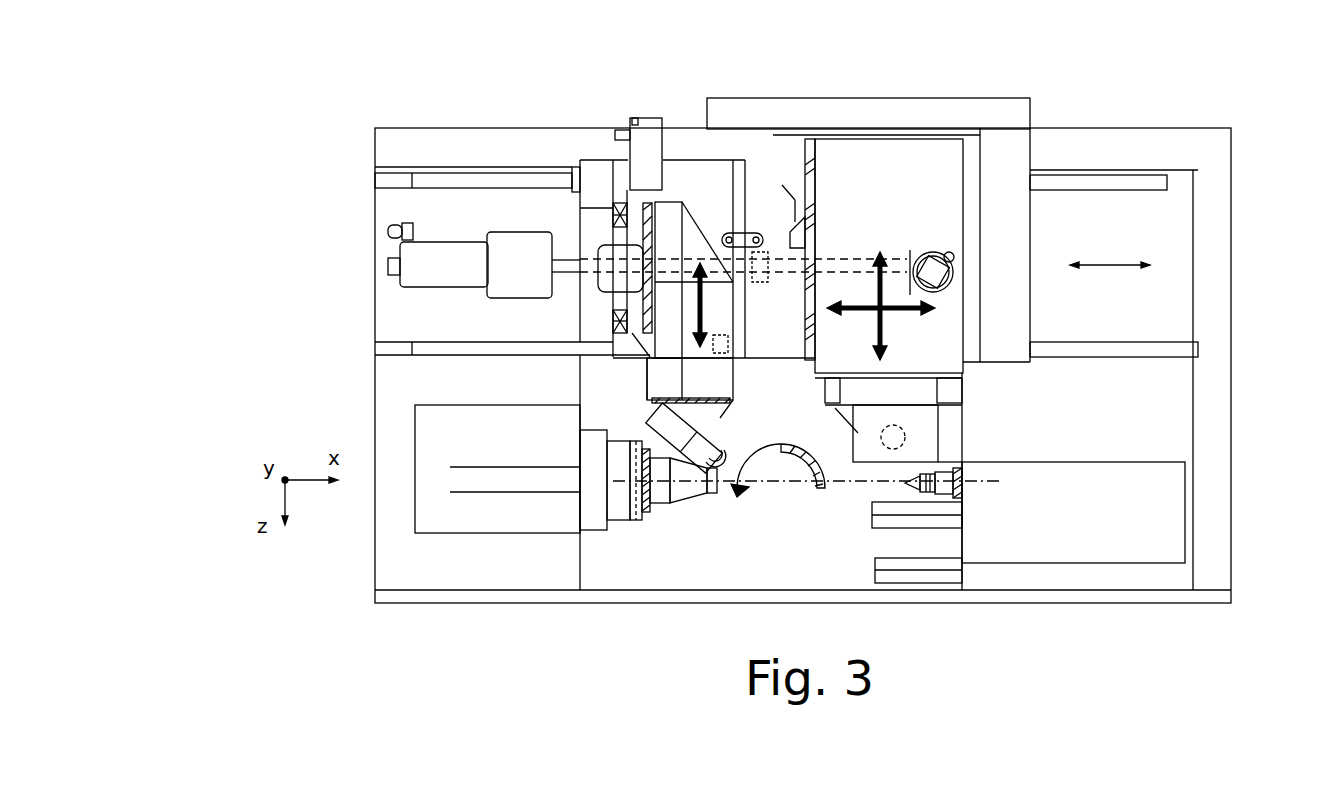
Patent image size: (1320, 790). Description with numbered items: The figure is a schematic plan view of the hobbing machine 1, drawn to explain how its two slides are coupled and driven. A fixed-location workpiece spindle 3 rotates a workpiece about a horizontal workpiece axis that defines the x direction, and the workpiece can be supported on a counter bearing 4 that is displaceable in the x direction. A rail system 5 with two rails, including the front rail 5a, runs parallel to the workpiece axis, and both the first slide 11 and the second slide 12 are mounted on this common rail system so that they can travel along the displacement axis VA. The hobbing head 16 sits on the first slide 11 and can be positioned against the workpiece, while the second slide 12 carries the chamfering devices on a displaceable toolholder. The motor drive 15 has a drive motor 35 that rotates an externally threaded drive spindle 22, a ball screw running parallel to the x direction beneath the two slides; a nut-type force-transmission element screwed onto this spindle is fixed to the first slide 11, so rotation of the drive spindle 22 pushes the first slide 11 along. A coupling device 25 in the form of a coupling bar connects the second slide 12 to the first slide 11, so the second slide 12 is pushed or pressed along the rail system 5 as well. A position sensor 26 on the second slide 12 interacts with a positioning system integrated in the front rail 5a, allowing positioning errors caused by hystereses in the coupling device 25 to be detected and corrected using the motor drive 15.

The hobbing machine 1 is at (1268, 183).
The workpiece spindle 3 is at (640, 517).
The counter bearing 4 is at (910, 485).
The rail system 5 is at (1105, 183).
The rail 5a is at (1082, 345).
The first slide 11 is at (878, 182).
The second slide 12 is at (702, 188).
The motor drive 15 is at (515, 255).
The hobbing head 16 is at (870, 437).
The drive spindle 22 is at (838, 263).
The coupling device 25 is at (767, 248).
The position sensor 26 is at (725, 355).
The drive motor 35 is at (445, 258).